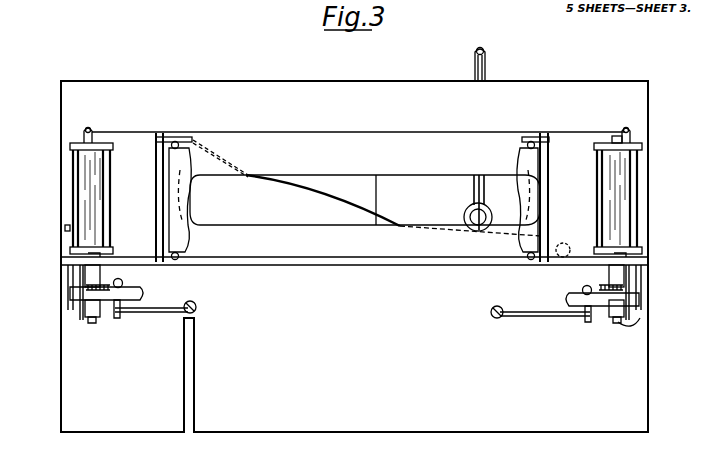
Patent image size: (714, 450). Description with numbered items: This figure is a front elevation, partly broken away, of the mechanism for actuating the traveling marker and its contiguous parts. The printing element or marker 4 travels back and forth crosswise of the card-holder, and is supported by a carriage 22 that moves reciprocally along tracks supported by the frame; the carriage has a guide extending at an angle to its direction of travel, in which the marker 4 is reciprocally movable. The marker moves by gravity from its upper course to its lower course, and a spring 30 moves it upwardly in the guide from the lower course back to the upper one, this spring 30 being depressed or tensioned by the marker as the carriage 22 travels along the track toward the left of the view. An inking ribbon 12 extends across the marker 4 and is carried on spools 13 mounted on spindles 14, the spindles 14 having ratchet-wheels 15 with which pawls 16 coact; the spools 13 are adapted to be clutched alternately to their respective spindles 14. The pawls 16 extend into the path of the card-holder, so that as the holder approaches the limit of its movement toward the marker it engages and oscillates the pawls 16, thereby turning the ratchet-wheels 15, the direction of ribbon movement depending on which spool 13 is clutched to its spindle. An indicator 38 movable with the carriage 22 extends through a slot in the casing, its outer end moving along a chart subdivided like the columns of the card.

The printing element or marker 4 is at (465, 212).
The inking ribbon 12 is at (136, 160).
The spools 13 is at (78, 144).
The spindles 14 is at (88, 320).
The ratchet-wheels 15 is at (70, 290).
The pawls 16 is at (130, 298).
The carriage 22 is at (388, 188).
The spring 30 is at (300, 193).
The indicator 38 is at (486, 50).